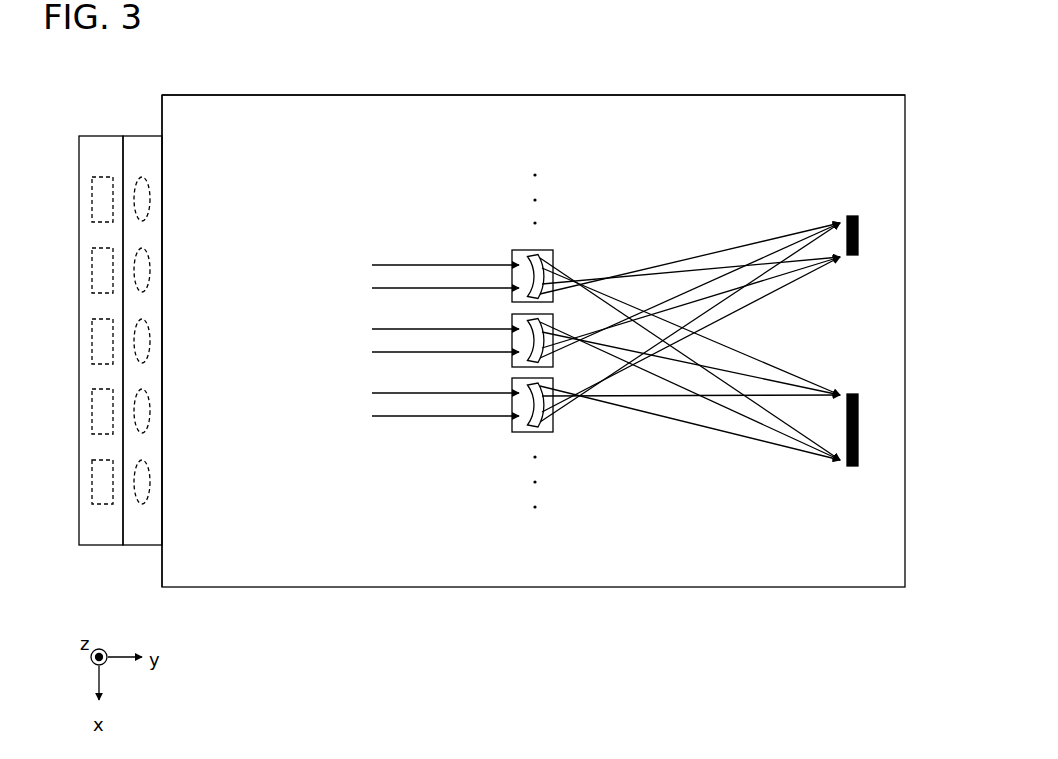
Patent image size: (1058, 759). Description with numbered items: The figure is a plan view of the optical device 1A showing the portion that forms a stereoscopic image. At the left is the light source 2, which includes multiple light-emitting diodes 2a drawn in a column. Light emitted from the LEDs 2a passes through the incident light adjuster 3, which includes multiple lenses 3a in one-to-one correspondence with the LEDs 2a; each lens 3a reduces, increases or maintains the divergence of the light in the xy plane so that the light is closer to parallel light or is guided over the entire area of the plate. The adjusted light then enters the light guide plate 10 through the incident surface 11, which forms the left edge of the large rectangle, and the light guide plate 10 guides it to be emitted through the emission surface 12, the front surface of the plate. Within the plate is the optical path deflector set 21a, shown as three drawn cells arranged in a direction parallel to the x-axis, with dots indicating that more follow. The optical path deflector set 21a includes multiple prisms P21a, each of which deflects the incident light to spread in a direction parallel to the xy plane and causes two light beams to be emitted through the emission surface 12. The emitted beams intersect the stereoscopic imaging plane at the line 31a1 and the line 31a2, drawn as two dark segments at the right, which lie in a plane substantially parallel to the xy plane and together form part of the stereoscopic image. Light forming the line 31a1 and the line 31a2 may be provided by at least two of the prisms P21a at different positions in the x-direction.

The optical device 1A is at (296, 70).
The light guide plate 10 is at (841, 90).
The incident surface 11 is at (160, 100).
The emission surface 12 is at (794, 113).
The light source 2 is at (101, 134).
The light-emitting diode 2a is at (103, 505).
The incident light adjuster 3 is at (139, 134).
The lens 3a is at (141, 505).
The optical path deflector set 21a is at (536, 522).
The prism P21a is at (512, 380).
The line 31a1 is at (858, 233).
The line 31a2 is at (858, 433).